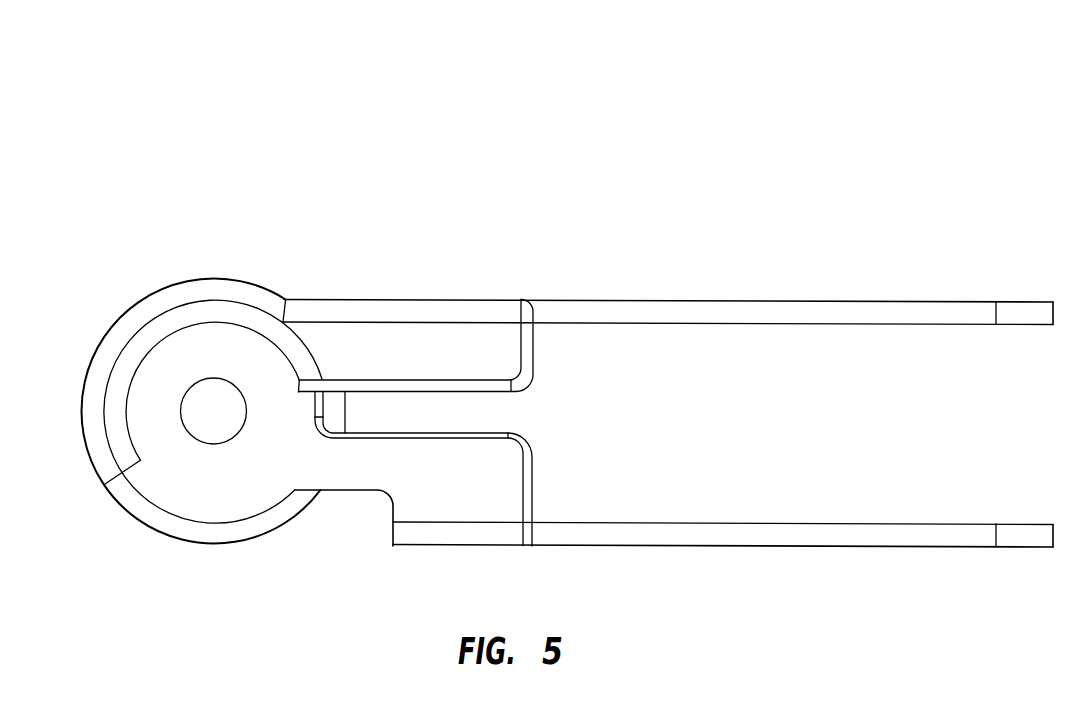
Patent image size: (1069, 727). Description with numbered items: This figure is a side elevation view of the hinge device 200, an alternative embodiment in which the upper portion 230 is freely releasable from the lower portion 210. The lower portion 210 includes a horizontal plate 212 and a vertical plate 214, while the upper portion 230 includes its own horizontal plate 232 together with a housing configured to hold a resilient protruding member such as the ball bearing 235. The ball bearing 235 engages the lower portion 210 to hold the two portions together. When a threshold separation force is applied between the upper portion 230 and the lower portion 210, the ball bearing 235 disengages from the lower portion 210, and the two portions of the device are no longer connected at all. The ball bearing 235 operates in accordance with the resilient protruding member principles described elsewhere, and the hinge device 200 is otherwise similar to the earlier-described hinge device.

The hinge device 200 is at (567, 356).
The lower portion 210 is at (651, 528).
The horizontal plate 212 is at (825, 525).
The vertical plate 214 is at (192, 495).
The upper portion 230 is at (668, 285).
The horizontal plate 232 is at (842, 304).
The ball bearing 235 is at (223, 420).